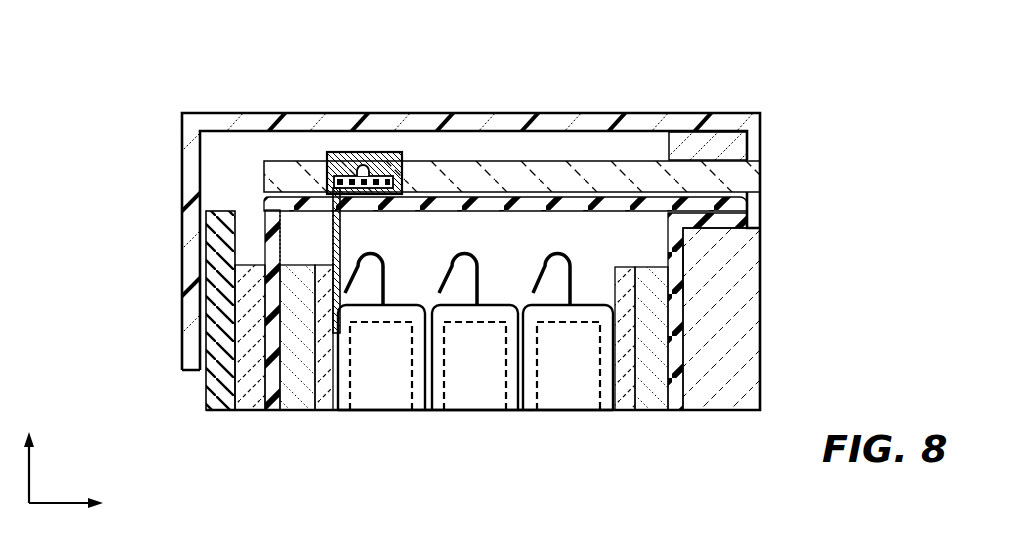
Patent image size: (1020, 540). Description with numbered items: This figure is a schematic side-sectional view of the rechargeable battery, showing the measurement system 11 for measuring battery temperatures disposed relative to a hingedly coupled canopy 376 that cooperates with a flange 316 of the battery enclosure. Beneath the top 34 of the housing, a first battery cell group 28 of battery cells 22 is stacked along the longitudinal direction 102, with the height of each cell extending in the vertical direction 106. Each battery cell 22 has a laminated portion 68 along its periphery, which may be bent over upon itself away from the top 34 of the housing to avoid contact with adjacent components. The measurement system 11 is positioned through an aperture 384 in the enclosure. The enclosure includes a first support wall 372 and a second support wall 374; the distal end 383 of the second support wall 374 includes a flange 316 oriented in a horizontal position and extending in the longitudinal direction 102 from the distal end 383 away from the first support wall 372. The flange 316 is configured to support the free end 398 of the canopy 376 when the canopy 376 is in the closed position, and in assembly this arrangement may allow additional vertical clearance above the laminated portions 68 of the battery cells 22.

The measurement system 11 is at (363, 150).
The battery cells 22 is at (491, 379).
The first battery cell group 28 is at (477, 411).
The top 34 is at (232, 113).
The laminated portion 68 is at (462, 256).
The longitudinal direction 102 is at (92, 504).
The vertical direction 106 is at (31, 450).
The flange 316 is at (760, 222).
The first support wall 372 is at (272, 412).
The second support wall 374 is at (677, 412).
The canopy 376 is at (570, 192).
The distal end 383 is at (687, 263).
The aperture 384 is at (341, 217).
The free end 398 is at (712, 197).